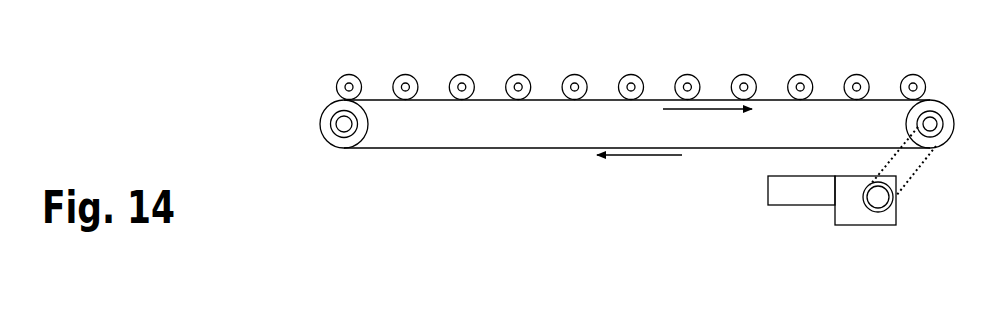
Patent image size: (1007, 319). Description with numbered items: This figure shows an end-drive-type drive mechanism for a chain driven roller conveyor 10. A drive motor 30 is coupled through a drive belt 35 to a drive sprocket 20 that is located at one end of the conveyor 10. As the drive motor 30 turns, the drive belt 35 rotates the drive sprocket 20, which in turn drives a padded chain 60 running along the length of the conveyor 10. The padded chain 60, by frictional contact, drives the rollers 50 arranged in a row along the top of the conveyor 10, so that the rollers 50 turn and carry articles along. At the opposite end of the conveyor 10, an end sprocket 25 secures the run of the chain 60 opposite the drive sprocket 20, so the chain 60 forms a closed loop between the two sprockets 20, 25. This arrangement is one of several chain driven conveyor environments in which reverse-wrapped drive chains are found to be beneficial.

The conveyor 10 is at (364, 54).
The drive sprocket 20 is at (937, 132).
The end sprocket 25 is at (322, 110).
The drive motor 30 is at (882, 218).
The drive belt 35 is at (917, 172).
The rollers 50 is at (682, 77).
The padded chain 60 is at (469, 149).